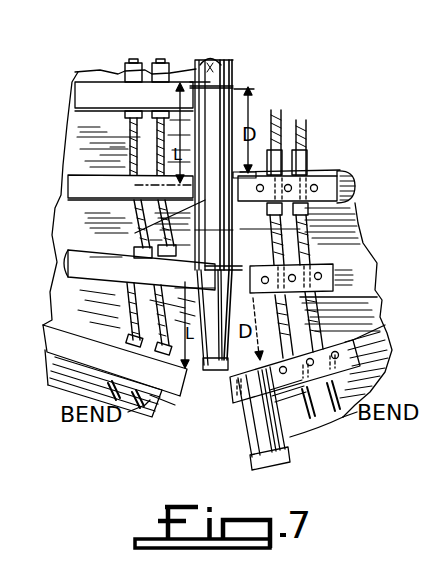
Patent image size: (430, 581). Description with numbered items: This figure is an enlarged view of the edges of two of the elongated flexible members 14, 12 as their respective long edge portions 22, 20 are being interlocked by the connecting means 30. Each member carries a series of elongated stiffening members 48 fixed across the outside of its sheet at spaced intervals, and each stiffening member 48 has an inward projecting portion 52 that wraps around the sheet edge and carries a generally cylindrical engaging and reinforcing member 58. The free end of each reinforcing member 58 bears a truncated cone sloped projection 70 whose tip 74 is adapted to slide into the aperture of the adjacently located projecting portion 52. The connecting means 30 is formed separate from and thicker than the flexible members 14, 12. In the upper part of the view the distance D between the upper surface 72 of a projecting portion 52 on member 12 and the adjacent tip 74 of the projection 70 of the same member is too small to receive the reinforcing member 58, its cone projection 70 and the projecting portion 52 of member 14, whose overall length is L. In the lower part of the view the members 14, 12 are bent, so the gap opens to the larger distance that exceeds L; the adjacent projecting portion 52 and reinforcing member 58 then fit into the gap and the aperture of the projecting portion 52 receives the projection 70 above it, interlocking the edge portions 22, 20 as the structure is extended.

The elongated flexible member 12 is at (360, 208).
The elongated flexible member 14 is at (70, 143).
The long edge portion 20 is at (300, 432).
The long edge portion 22 is at (170, 410).
The connecting means 30 is at (236, 229).
The elongated stiffening member 48 is at (78, 86).
The projecting portion 52 is at (202, 58).
The engaging and reinforcing member 58 is at (190, 72).
The cone sloped projection 70 is at (292, 472).
The upper surface 72 is at (222, 60).
The tip 74 is at (232, 80).